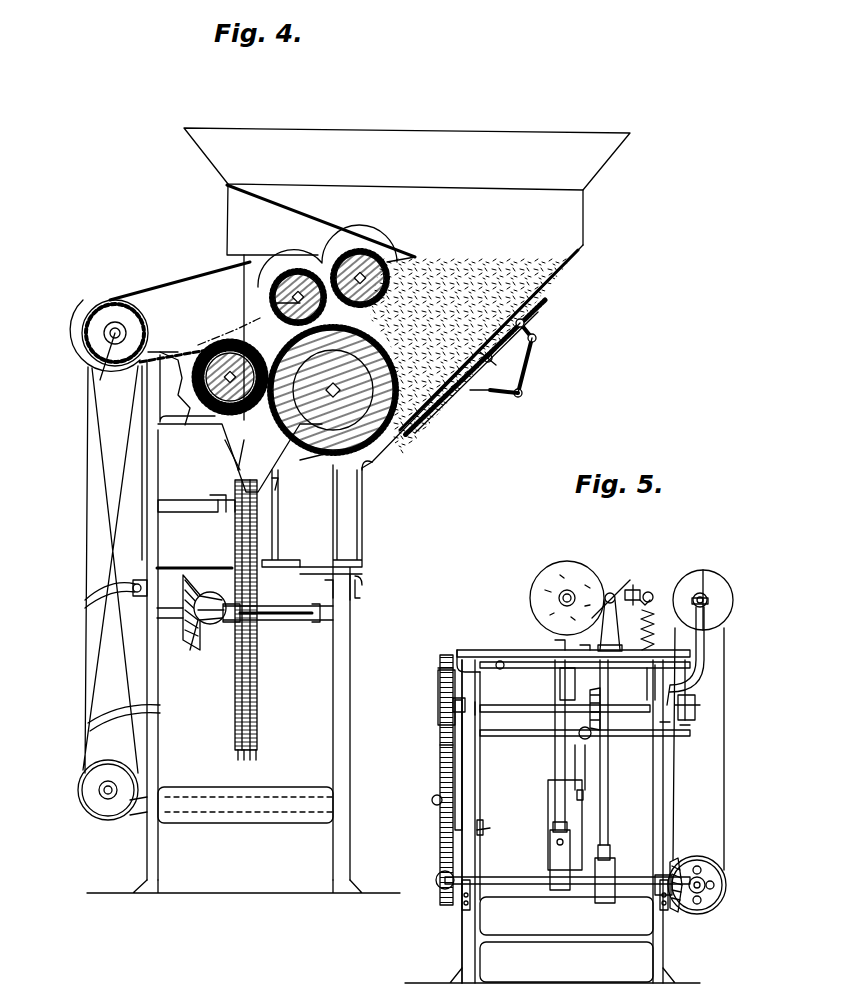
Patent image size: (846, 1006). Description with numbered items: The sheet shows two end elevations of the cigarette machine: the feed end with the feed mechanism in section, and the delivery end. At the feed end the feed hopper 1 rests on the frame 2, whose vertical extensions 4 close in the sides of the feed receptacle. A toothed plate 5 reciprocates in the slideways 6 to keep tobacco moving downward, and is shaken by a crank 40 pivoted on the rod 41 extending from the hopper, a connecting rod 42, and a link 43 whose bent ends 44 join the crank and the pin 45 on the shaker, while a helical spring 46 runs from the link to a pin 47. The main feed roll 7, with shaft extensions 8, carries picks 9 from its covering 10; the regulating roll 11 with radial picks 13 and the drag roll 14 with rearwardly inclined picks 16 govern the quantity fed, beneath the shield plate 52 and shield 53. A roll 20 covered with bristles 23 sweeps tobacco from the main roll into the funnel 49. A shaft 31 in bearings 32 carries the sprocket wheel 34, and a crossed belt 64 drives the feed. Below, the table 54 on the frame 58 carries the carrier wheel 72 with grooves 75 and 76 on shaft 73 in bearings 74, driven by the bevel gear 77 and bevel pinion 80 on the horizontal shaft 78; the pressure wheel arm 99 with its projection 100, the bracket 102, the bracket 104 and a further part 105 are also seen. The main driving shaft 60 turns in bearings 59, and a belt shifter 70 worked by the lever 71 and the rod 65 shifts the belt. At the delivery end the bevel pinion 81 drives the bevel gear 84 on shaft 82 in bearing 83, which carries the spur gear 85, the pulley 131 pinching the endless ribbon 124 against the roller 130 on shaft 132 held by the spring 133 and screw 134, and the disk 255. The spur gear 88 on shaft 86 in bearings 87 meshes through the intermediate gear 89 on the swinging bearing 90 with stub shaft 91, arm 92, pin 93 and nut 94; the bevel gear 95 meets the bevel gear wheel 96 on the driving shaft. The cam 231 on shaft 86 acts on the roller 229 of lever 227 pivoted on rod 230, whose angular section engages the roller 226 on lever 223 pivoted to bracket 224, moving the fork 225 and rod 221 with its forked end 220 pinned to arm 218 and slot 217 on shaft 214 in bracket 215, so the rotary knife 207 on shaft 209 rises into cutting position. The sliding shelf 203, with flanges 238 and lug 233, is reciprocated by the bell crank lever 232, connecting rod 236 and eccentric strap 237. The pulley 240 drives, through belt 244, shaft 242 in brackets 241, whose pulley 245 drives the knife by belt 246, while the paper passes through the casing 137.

In FIG. 4, the feed hopper 1 is at (464, 142).
In FIG. 4, the shield plate 52 is at (328, 222).
In FIG. 4, the shield 53 is at (329, 257).
In FIG. 4, the regulating roll 11 is at (388, 276).
In FIG. 4, the picks 13 is at (418, 259).
In FIG. 4, the drag roll 14 is at (272, 293).
In FIG. 4, the picks 16 is at (272, 303).
In FIG. 4, the vertical extensions 4 is at (244, 262).
In FIG. 4, the covering 10 is at (229, 328).
In FIG. 4, the roll 20 is at (210, 352).
In FIG. 4, the bristles 23 is at (190, 350).
In FIG. 4, the sprocket wheel 34 is at (98, 336).
In FIG. 4, the shaft 31 is at (100, 365).
In FIG. 4, the bearings 32 is at (168, 295).
In FIG. 4, the shaft extensions 8 is at (333, 390).
In FIG. 4, the slideways 6 is at (552, 292).
In FIG. 4, the main feed roll 7 is at (378, 463).
In FIG. 4, the toothed plate 5 is at (445, 418).
In FIG. 4, the pin 47 is at (425, 420).
In FIG. 4, the crank 40 is at (536, 352).
In FIG. 4, the rod 41 is at (538, 330).
In FIG. 4, the bent ends 44 is at (530, 322).
In FIG. 4, the link 43 is at (495, 356).
In FIG. 4, the pin 45 is at (528, 365).
In FIG. 4, the connecting rod 42 is at (496, 393).
In FIG. 4, the helical spring 46 is at (480, 392).
In FIG. 4, the frame 2 is at (180, 424).
In FIG. 4, the funnel 49 is at (256, 452).
In FIG. 4, the bracket 104 is at (226, 462).
In FIG. 4, the chute wall 105 is at (277, 475).
In FIG. 4, the picks 9 is at (316, 469).
In FIG. 4, the lever 71 is at (351, 738).
In FIG. 4, the frame 58 is at (362, 587).
In FIG. 5, the frame 58 is at (476, 772).
In FIG. 4, the right angular projection 100 is at (178, 514).
In FIG. 4, the arm 99 is at (212, 512).
In FIG. 4, the bracket 102 is at (280, 540).
In FIG. 4, the table 54 is at (195, 568).
In FIG. 4, the carrier wheel 72 is at (258, 663).
In FIG. 4, the bevel gear 77 is at (195, 588).
In FIG. 4, the bevel pinion 80 is at (210, 626).
In FIG. 4, the bearings 74 is at (168, 622).
In FIG. 4, the horizontal shaft 78 is at (198, 650).
In FIG. 4, the shaft 73 is at (295, 620).
In FIG. 4, the circumferential groove 75 is at (240, 752).
In FIG. 4, the circumferential groove 76 is at (254, 752).
In FIG. 4, the crossed belt 64 is at (104, 512).
In FIG. 4, the rod 65 is at (137, 598).
In FIG. 4, the belt shifter 70 is at (95, 712).
In FIG. 4, the main driving shaft 60 is at (100, 792).
In FIG. 5, the main driving shaft 60 is at (706, 885).
In FIG. 4, the horizontal bearings 59 is at (138, 812).
In FIG. 5, the sliding shelf 203 is at (472, 650).
In FIG. 5, the bracket 224 is at (457, 655).
In FIG. 5, the lug 233 is at (515, 662).
In FIG. 5, the lever 223 is at (502, 670).
In FIG. 5, the screw 134 is at (560, 645).
In FIG. 5, the rotary knife 207 is at (563, 573).
In FIG. 5, the shaft 209 is at (572, 594).
In FIG. 5, the shaft 214 is at (612, 592).
In FIG. 5, the bracket 215 is at (609, 610).
In FIG. 5, the belt 246 is at (640, 585).
In FIG. 5, the arc-shaped slot 217 is at (652, 592).
In FIG. 5, the arm 218 is at (652, 602).
In FIG. 5, the rod 221 is at (656, 630).
In FIG. 5, the forked upper end 220 is at (708, 583).
In FIG. 5, the pulley 245 is at (715, 588).
In FIG. 5, the shaft 242 is at (708, 598).
In FIG. 5, the brackets 241 is at (710, 606).
In FIG. 5, the flanges 238 is at (706, 630).
In FIG. 5, the fork 225 is at (700, 660).
In FIG. 5, the roller 226 is at (680, 675).
In FIG. 5, the bevel pinion 81 is at (690, 690).
In FIG. 5, the bevel gear 84 is at (697, 702).
In FIG. 5, the disk 255 is at (700, 712).
In FIG. 5, the bearing 83 is at (455, 680).
In FIG. 5, the pulley 131 is at (570, 690).
In FIG. 5, the spring 133 is at (540, 708).
In FIG. 5, the rod 230 is at (512, 737).
In FIG. 5, the bell crank lever 232 is at (560, 685).
In FIG. 5, the shaft 82 is at (535, 698).
In FIG. 5, the endless ribbon 124 is at (575, 740).
In FIG. 5, the shaft 132 is at (572, 760).
In FIG. 5, the roller 130 is at (570, 790).
In FIG. 5, the connecting rod 236 is at (555, 778).
In FIG. 5, the eccentric strap 237 is at (552, 890).
In FIG. 5, the lever 227 is at (610, 783).
In FIG. 5, the casing 137 is at (585, 812).
In FIG. 5, the roller 229 is at (612, 851).
In FIG. 5, the cam 231 is at (604, 903).
In FIG. 5, the shaft 86 is at (504, 877).
In FIG. 5, the nut 94 is at (480, 820).
In FIG. 5, the pin 93 is at (493, 822).
In FIG. 5, the spur gear wheel 89 is at (440, 825).
In FIG. 5, the spur gear wheel 85 is at (438, 684).
In FIG. 5, the swinging bearing 90 is at (455, 760).
In FIG. 5, the arm 92 is at (445, 750).
In FIG. 5, the stub shaft 91 is at (432, 802).
In FIG. 5, the spur gear wheel 88 is at (440, 900).
In FIG. 5, the bearings 87 is at (462, 910).
In FIG. 5, the pulley 240 is at (712, 905).
In FIG. 5, the bevel gear 95 is at (676, 862).
In FIG. 5, the bevel gear wheel 96 is at (700, 866).
In FIG. 5, the belt 244 is at (724, 770).